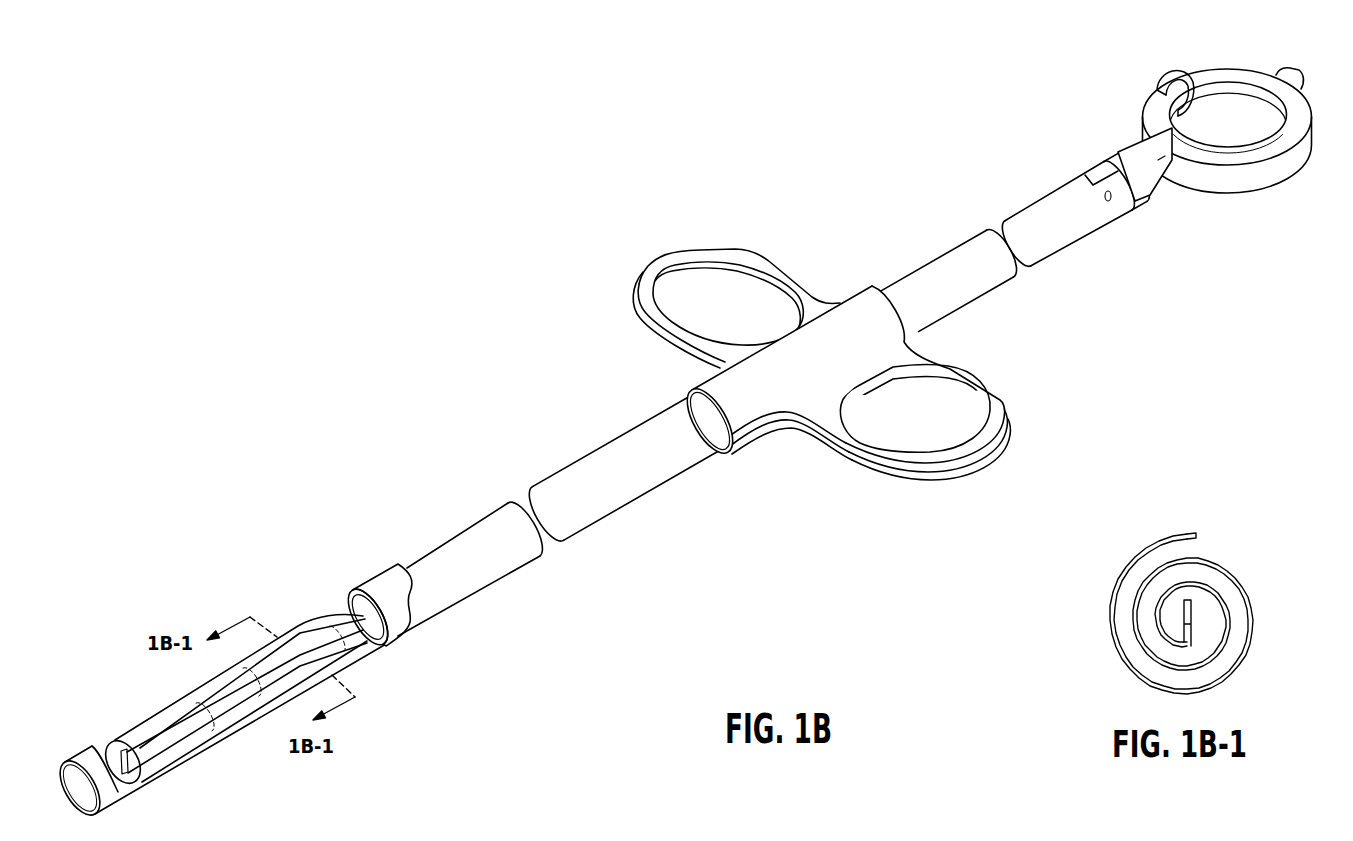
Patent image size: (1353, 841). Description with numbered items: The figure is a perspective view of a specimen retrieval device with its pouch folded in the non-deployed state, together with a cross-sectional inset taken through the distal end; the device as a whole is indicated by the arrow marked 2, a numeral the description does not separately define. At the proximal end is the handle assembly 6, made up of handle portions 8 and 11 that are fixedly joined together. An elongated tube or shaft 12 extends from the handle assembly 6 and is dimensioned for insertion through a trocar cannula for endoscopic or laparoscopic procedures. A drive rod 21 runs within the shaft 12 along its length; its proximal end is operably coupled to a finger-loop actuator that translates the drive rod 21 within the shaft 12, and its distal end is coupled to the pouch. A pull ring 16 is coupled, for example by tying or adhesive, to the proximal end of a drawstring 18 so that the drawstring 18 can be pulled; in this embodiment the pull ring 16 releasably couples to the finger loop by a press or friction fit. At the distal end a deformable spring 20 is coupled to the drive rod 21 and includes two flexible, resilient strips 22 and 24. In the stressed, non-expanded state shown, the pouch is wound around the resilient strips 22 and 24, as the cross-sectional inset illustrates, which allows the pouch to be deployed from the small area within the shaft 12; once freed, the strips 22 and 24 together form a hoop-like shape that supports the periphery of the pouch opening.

In FIG. 1B, the tissue fastening system 2 is at (498, 279).
In FIG. 1B, the handle assembly 6 is at (830, 236).
In FIG. 1B, the handle portion 8 is at (661, 262).
In FIG. 1B, the handle portion 11 is at (998, 401).
In FIG. 1B, the elongated tube or shaft 12 is at (605, 445).
In FIG. 1B, the pull ring 16 is at (1200, 72).
In FIG. 1B, the drawstring 18 is at (1163, 82).
In FIG. 1B, the deformable spring 20 is at (305, 620).
In FIG. 1B, the drive rod 21 is at (380, 584).
In FIG. 1B, the resilient strip 22 is at (213, 697).
In FIG. 1B, the resilient strip 24 is at (184, 737).
In FIG. 1B-1, the resilient strip 24 is at (1192, 613).